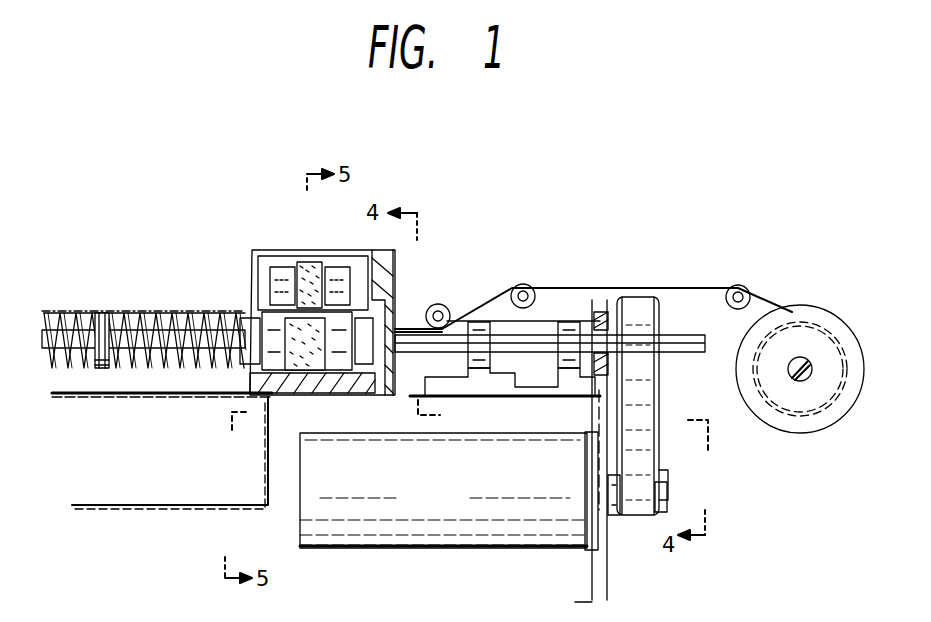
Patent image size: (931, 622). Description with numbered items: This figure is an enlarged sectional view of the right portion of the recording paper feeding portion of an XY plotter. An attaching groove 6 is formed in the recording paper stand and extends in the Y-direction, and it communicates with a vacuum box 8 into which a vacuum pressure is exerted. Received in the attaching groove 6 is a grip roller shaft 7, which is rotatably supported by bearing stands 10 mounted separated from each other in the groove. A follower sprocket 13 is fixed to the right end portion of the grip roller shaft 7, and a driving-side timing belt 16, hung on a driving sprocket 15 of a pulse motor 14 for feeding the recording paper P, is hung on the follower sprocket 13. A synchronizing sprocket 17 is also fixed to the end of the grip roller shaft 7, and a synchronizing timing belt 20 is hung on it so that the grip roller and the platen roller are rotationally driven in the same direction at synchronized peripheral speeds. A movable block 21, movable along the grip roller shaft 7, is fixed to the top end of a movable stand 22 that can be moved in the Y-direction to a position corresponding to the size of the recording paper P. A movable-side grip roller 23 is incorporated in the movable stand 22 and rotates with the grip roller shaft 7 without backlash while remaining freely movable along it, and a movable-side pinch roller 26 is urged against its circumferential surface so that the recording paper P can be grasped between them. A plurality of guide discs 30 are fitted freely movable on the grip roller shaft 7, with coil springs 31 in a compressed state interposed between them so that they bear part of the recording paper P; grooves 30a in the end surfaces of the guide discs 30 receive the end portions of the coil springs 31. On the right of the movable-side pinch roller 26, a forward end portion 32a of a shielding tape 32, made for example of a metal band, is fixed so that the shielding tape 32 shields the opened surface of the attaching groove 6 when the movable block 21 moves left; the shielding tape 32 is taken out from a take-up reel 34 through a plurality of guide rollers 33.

The recording paper P is at (73, 306).
The grip roller shaft 7 is at (166, 300).
The guide discs 30 is at (105, 314).
The grooves 30a is at (105, 372).
The coil springs 31 is at (182, 372).
The attaching groove 6 is at (140, 394).
The vacuum box 8 is at (138, 508).
The movable block 21 is at (395, 265).
The movable stand 22 is at (328, 382).
The movable-side grip roller 23 is at (305, 320).
The movable-side pinch roller 26 is at (295, 262).
The shielding tape 32 is at (640, 288).
The forward end portion 32a is at (418, 318).
The guide rollers 33 is at (445, 310).
The bearing stands 10 is at (540, 388).
The synchronizing sprocket 17 is at (600, 312).
The synchronizing timing belt 20 is at (604, 575).
The follower sprocket 13 is at (645, 300).
The driving-side timing belt 16 is at (640, 455).
The driving sprocket 15 is at (668, 512).
The pulse motor 14 is at (410, 550).
The take-up reel 34 is at (838, 412).